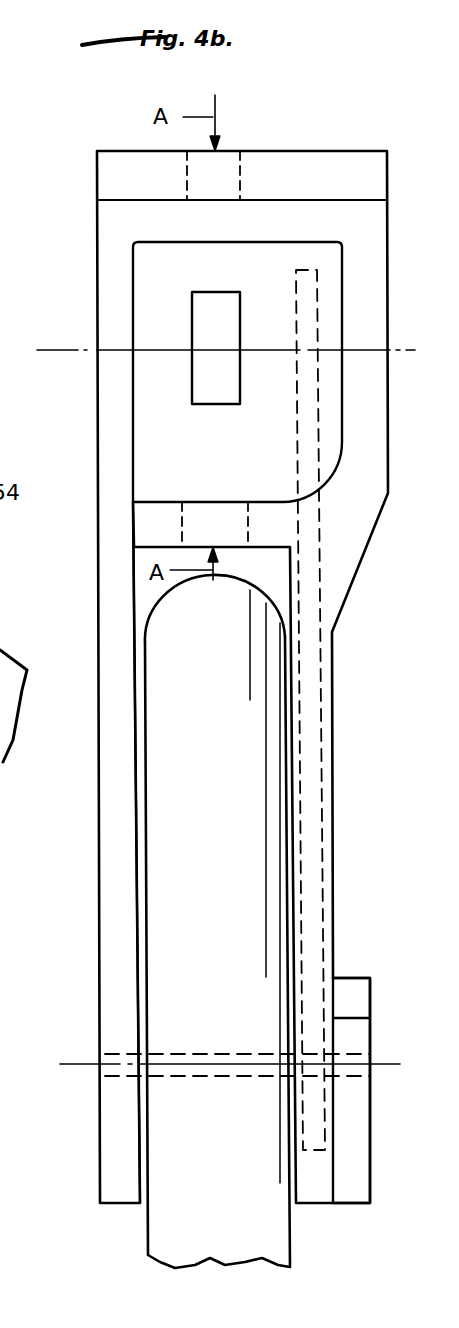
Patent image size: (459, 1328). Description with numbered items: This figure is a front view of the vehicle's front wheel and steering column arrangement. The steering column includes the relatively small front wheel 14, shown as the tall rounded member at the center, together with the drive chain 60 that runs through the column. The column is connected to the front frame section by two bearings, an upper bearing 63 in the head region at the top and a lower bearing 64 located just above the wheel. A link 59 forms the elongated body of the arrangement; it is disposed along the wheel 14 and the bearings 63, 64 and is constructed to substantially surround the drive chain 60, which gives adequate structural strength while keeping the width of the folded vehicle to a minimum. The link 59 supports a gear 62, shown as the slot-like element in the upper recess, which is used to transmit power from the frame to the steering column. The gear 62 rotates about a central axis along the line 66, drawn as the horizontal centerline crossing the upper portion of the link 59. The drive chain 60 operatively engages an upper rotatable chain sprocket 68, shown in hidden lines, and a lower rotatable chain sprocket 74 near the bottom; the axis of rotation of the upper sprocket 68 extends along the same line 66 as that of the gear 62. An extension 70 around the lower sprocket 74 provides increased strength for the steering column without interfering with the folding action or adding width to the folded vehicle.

The front wheel 14 is at (200, 683).
The link 59 is at (353, 608).
The drive chain 60 is at (296, 470).
The gear 62 is at (233, 343).
The upper bearing 63 is at (222, 165).
The lower bearing 64 is at (200, 523).
The line of central axis 66 is at (65, 352).
The upper rotatable chain sprocket 68 is at (300, 297).
The extension 70 is at (346, 1035).
The lower rotatable chain sprocket 74 is at (313, 1094).